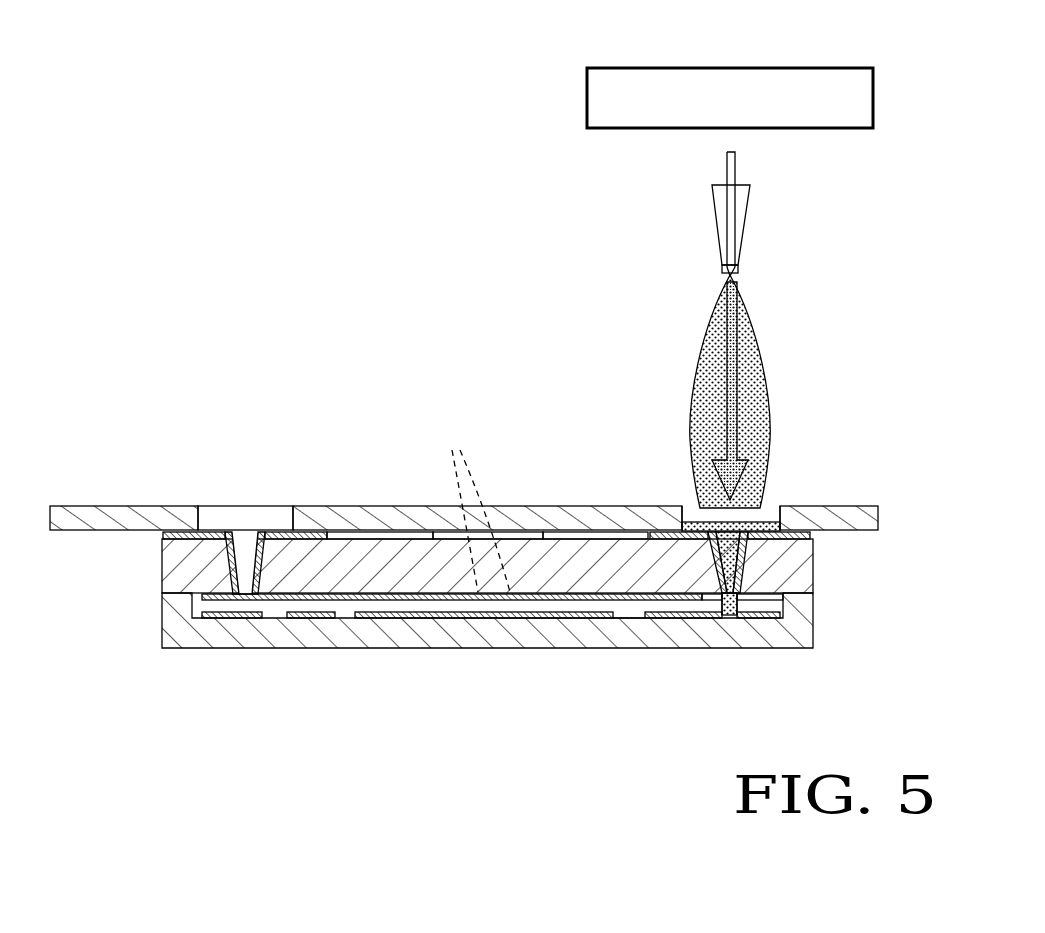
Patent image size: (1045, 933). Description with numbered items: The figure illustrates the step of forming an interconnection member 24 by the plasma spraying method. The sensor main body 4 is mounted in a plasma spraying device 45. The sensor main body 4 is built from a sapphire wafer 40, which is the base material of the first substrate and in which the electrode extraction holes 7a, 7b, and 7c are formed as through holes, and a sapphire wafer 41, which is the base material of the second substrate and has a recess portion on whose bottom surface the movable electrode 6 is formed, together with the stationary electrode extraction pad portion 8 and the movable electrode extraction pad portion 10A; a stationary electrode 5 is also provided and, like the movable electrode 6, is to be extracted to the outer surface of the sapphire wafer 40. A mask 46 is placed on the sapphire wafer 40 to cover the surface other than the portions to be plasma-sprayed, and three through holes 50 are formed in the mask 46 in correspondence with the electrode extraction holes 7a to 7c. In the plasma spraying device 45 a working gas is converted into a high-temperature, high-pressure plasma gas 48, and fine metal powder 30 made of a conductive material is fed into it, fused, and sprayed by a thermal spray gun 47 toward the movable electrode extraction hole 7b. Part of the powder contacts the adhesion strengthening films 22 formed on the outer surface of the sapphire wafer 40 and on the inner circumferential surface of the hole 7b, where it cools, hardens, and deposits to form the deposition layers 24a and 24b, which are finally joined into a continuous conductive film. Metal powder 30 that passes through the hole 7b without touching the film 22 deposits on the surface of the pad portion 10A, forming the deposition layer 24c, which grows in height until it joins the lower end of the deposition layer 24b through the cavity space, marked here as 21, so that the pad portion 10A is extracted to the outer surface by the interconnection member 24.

The sensor main body 4 is at (441, 640).
The stationary electrode 5 is at (397, 601).
The movable electrode 6 is at (323, 619).
The electrode extraction hole 7a is at (249, 538).
The movable electrode extraction hole 7b is at (730, 530).
The electrode extraction hole 7c is at (475, 506).
The stationary electrode extraction pad portion 8 is at (238, 619).
The movable electrode extraction pad portion 10A is at (729, 618).
The gap 21 is at (626, 605).
The adhesion strengthening film 22 is at (305, 532).
The interconnection member 24 is at (752, 534).
The deposition layer 24a is at (767, 507).
The deposition layer 24b is at (742, 548).
The deposition layer 24c is at (745, 606).
The fine metal powder 30 is at (732, 395).
The sapphire wafer 40 is at (175, 578).
The sapphire wafer 41 is at (175, 630).
The plasma spraying device 45 is at (835, 68).
The mask 46 is at (153, 512).
The thermal spray gun 47 is at (745, 212).
The plasma gas 48 is at (700, 372).
The through hole 50 is at (206, 528).